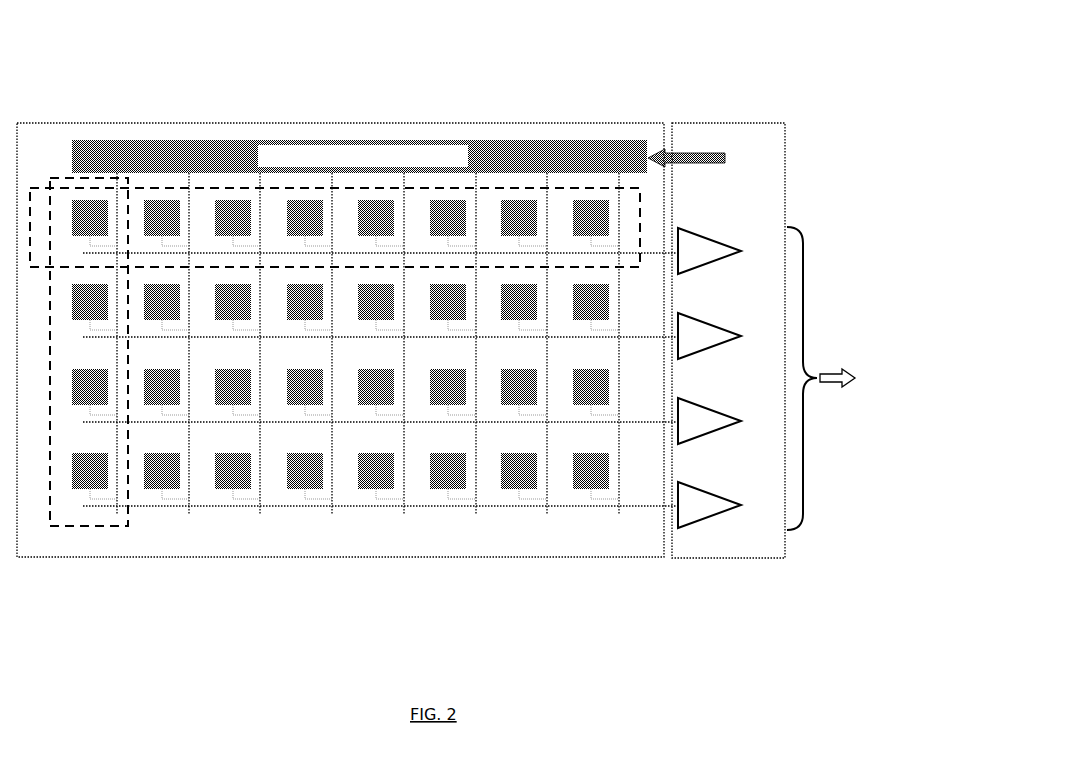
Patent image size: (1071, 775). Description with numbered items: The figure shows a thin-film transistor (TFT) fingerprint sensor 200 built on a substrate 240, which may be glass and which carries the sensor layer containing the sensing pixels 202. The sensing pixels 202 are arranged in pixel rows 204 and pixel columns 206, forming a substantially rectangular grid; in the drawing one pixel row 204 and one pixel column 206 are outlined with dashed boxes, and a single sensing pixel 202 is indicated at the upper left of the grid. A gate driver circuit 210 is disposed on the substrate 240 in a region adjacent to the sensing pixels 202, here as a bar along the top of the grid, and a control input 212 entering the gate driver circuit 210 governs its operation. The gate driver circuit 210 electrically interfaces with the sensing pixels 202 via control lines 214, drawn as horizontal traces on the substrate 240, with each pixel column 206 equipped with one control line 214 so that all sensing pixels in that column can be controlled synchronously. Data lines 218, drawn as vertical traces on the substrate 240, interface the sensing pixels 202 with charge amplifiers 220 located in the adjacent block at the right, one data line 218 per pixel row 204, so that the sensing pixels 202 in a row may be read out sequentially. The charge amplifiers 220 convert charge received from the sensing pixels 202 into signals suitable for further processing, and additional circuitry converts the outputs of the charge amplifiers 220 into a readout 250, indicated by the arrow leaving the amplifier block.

The thin-film transistor (TFT) fingerprint sensor 200 is at (549, 66).
The sensing pixels 202 is at (90, 216).
The pixel rows 204 is at (256, 188).
The pixel columns 206 is at (60, 526).
The gate driver circuit 210 is at (359, 156).
The control input 212 is at (713, 157).
The control lines 214 is at (117, 490).
The data lines 218 is at (397, 505).
The charge amplifiers 220 is at (702, 508).
The substrate 240 is at (576, 545).
The readout 250 is at (856, 378).